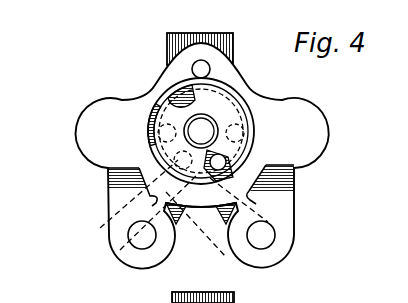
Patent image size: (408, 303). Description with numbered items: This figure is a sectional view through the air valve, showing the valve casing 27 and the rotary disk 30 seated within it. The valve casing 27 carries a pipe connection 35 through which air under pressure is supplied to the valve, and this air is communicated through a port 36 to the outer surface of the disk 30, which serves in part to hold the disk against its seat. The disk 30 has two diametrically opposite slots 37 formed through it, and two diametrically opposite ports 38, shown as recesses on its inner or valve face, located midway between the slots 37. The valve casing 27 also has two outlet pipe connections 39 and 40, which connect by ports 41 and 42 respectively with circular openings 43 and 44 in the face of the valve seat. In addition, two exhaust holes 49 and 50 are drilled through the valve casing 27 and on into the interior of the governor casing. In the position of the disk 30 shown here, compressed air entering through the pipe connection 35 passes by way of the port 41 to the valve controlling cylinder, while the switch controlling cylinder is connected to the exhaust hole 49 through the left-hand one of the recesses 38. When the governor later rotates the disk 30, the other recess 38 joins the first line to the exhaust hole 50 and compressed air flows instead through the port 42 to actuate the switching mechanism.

The valve casing 27 is at (155, 87).
The disk 30 is at (206, 93).
The pipe connection 35 is at (167, 43).
The port 36 is at (203, 60).
The slots 37 is at (189, 96).
The ports 38 is at (228, 113).
The outlet pipe connection 39 is at (143, 235).
The outlet pipe connection 40 is at (266, 237).
The port 41 is at (171, 212).
The port 42 is at (230, 212).
The circular opening 43 is at (278, 183).
The circular opening 44 is at (114, 209).
The exhaust hole 49 is at (164, 138).
The exhaust hole 50 is at (240, 133).